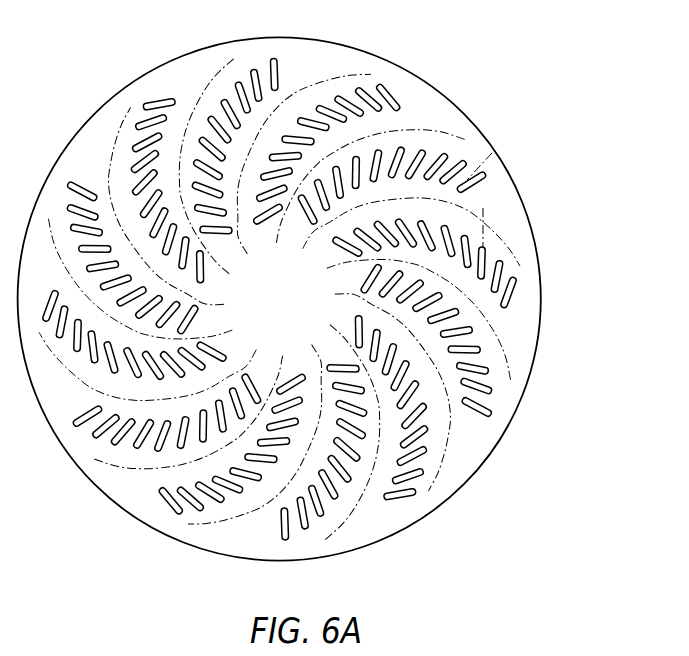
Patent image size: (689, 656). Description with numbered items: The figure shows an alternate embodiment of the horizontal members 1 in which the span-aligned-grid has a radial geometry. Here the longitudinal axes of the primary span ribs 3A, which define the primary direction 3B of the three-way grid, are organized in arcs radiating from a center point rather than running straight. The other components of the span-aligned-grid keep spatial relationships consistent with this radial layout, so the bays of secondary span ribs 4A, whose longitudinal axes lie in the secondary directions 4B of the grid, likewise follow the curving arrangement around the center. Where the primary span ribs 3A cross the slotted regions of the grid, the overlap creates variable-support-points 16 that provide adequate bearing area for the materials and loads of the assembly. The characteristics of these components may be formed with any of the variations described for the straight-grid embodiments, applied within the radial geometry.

The horizontal members 1 is at (332, 40).
The primary span ribs 3A is at (387, 116).
The primary direction 3B is at (423, 130).
The secondary span ribs 4A is at (470, 168).
The secondary directions 4B is at (486, 168).
The variable-support-points 16 is at (485, 220).